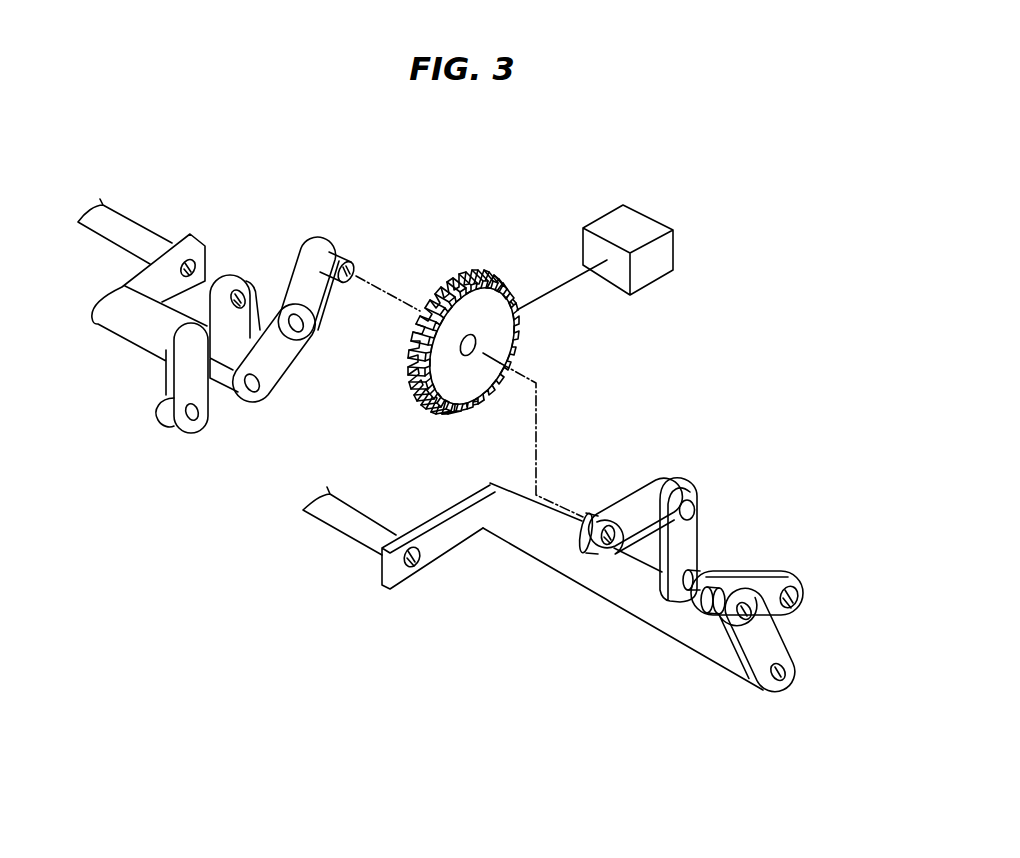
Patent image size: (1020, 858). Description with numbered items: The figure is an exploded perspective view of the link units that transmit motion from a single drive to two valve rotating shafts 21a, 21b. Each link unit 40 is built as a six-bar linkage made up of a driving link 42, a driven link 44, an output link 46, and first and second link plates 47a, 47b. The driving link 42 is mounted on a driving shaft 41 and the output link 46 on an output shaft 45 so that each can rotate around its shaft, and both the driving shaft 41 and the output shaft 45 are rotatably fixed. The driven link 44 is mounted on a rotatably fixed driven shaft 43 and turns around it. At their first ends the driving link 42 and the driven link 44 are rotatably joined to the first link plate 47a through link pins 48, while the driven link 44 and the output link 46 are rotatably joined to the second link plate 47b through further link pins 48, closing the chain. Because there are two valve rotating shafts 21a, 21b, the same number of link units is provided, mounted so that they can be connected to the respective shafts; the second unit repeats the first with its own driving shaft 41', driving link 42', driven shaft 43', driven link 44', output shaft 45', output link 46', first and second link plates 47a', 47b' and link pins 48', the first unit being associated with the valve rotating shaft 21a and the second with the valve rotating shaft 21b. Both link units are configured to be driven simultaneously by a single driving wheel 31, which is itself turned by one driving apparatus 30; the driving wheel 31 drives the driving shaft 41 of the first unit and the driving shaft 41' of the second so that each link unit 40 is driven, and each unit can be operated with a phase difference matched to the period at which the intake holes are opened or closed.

The valve rotating shaft 21a is at (127, 228).
The valve rotating shaft 21b is at (342, 532).
The driving apparatus 30 is at (632, 218).
The driving wheel 31 is at (463, 277).
The link unit 40 is at (393, 180).
The driving shaft 41 is at (363, 244).
The driving link 42 is at (308, 252).
The driven shaft 43 is at (237, 291).
The driven link 44 is at (266, 269).
The output shaft 45 is at (209, 222).
The output link 46 is at (119, 330).
The first link plate 47a is at (304, 369).
The second link plate 47b is at (200, 431).
The link pin 48 is at (241, 406).
The driving shaft 41' is at (594, 584).
The driving link 42' is at (636, 467).
The driven shaft 43' is at (841, 596).
The driven link 44' is at (780, 556).
The output shaft 45' is at (414, 610).
The output link 46' is at (572, 586).
The first link plate 47a' is at (737, 540).
The second link plate 47b' is at (813, 639).
The link pin 48' is at (741, 603).